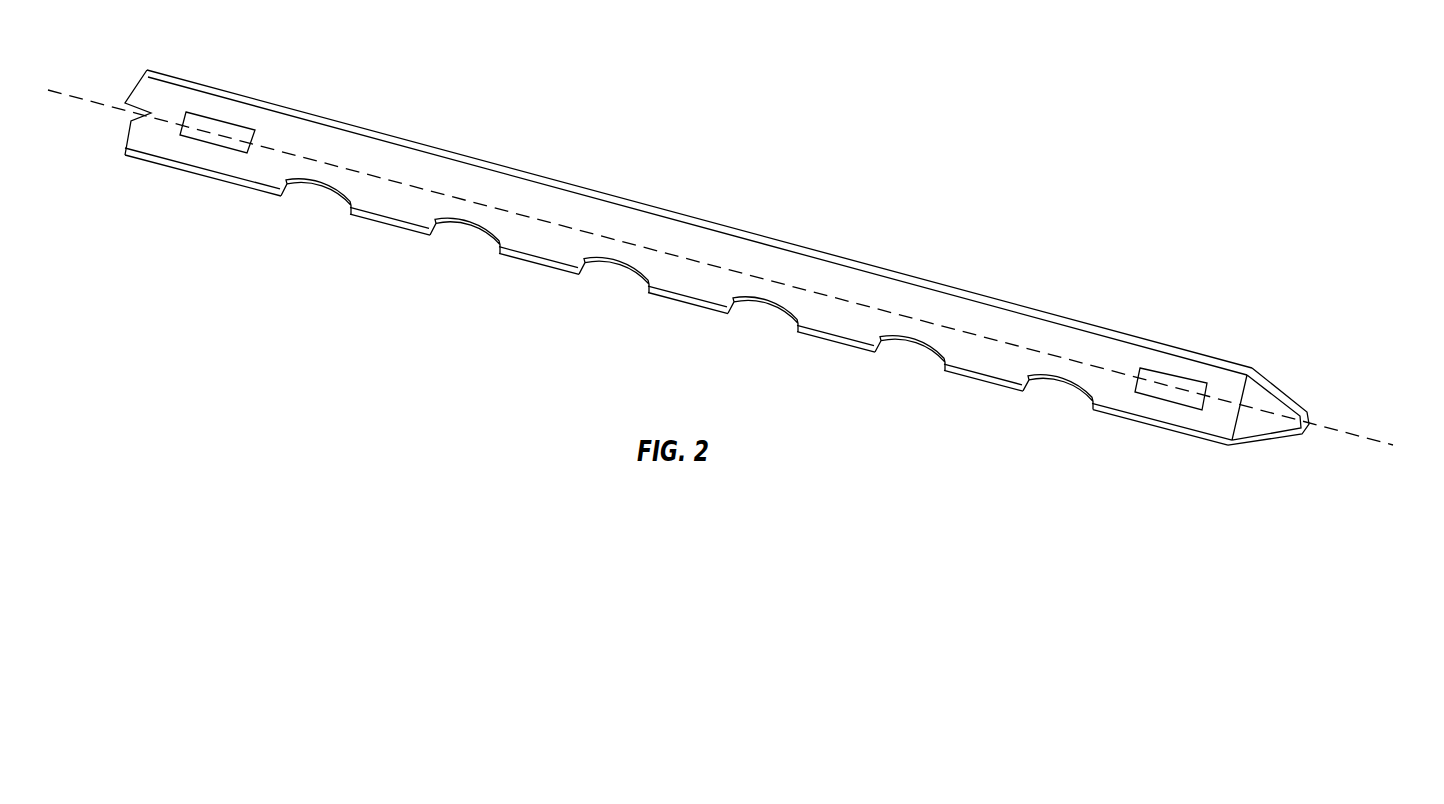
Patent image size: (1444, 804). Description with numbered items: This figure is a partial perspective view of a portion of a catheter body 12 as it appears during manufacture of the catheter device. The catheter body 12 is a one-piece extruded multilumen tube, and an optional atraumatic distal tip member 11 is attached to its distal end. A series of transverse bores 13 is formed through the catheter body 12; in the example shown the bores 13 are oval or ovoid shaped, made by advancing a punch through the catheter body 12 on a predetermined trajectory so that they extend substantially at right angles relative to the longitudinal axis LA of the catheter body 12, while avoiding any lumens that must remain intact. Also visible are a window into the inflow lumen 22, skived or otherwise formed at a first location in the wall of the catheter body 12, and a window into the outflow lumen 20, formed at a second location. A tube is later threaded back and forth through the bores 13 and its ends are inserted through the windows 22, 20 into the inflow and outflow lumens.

The atraumatic distal tip member 11 is at (1262, 442).
The catheter body 12 is at (290, 128).
The transverse bores 13 is at (309, 208).
The window into the outflow lumen 20 is at (215, 123).
The window into the inflow lumen 22 is at (1163, 380).
The longitudinal axis LA is at (736, 279).